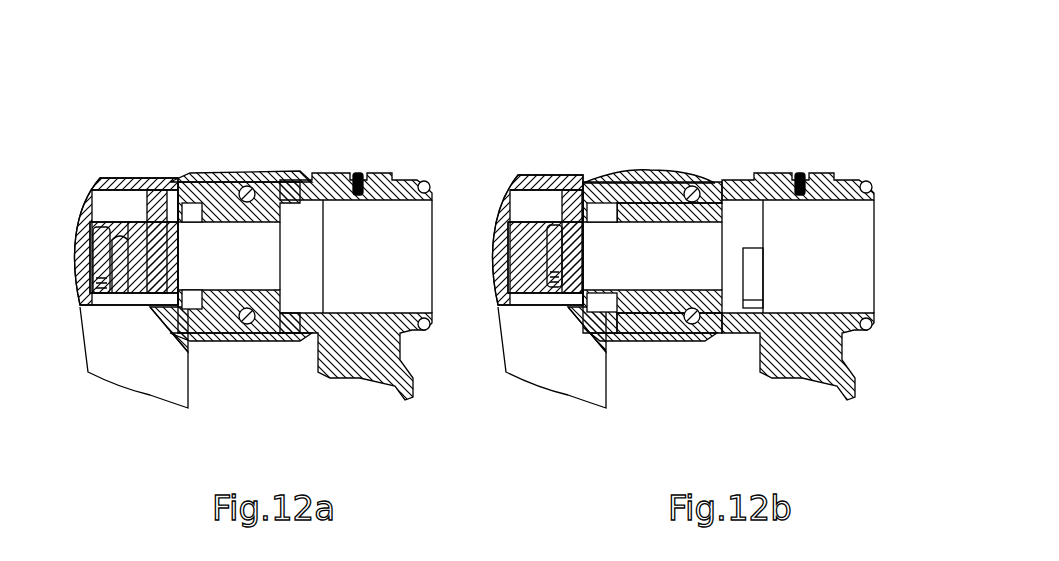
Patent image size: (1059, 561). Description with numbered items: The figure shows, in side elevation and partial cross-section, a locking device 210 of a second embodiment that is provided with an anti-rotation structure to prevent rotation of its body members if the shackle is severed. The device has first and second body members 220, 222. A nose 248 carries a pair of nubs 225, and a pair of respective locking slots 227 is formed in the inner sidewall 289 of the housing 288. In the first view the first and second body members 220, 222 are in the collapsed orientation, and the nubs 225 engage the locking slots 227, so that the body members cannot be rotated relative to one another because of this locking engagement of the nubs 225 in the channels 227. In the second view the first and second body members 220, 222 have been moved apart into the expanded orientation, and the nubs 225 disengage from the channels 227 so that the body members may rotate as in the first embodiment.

In FIG. 12A, the locking device 210 is at (378, 130).
In FIG. 12B, the locking device 210 is at (755, 92).
In FIG. 12A, the first body member 220 is at (415, 380).
In FIG. 12B, the first body member 220 is at (838, 392).
In FIG. 12A, the second body member 222 is at (80, 326).
In FIG. 12B, the second body member 222 is at (570, 377).
In FIG. 12A, the nubs 225 is at (240, 172).
In FIG. 12B, the nubs 225 is at (670, 173).
In FIG. 12A, the locking slots 227 is at (227, 172).
In FIG. 12B, the locking slots 227 is at (650, 300).
In FIG. 12A, the nose 248 is at (215, 310).
In FIG. 12B, the nose 248 is at (660, 343).
In FIG. 12A, the housing 288 is at (105, 155).
In FIG. 12A, the inner sidewall 289 is at (177, 173).
In FIG. 12B, the inner sidewall 289 is at (572, 177).